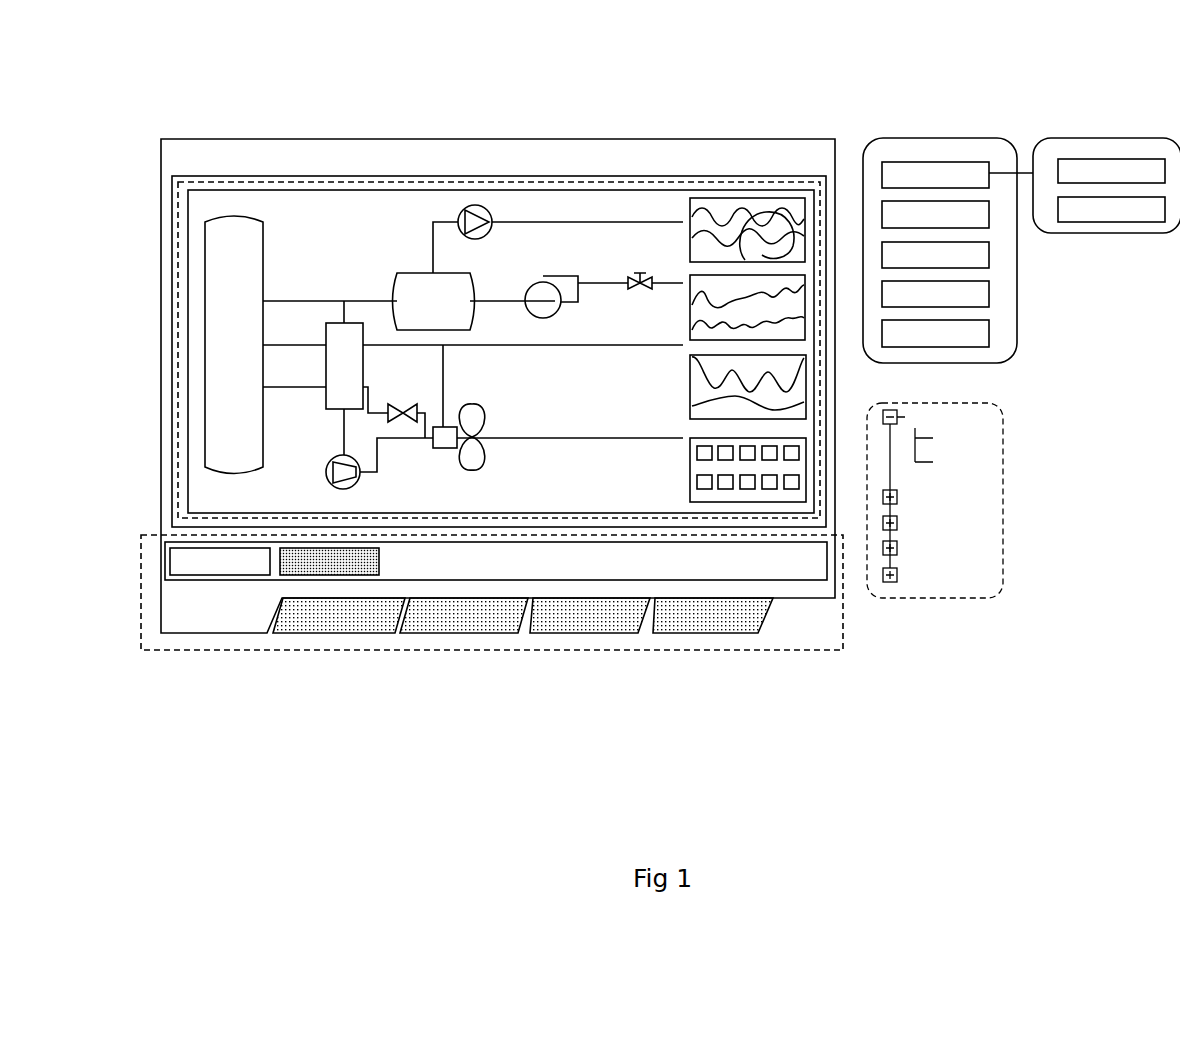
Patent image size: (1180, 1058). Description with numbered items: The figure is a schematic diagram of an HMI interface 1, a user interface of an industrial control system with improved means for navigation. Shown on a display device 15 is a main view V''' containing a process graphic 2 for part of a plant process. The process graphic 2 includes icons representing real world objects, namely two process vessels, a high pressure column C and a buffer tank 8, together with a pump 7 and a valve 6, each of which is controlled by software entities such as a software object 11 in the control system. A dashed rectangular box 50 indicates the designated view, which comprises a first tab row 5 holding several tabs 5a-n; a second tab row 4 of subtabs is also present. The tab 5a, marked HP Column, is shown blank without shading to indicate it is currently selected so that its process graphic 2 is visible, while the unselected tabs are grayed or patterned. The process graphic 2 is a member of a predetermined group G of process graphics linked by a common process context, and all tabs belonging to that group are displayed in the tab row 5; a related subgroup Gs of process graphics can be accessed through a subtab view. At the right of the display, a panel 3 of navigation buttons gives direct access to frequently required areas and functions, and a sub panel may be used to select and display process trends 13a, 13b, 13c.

The HMI interface 1 is at (499, 314).
The process graphic 2 is at (468, 367).
The panel 3 is at (762, 495).
The second tab row 4 is at (170, 555).
The first tab row 5 is at (771, 620).
The tab 5a is at (208, 630).
The tabs 5a-n is at (485, 690).
The valve 6 is at (445, 435).
The pump 7 is at (553, 285).
The buffer tank 8 is at (412, 285).
The software object 11 is at (987, 512).
The process trend 13a is at (779, 203).
The process trend 13b is at (792, 329).
The process trend 13c is at (800, 373).
The display device 15 is at (170, 158).
The rectangular box 50 is at (135, 533).
The high pressure column C is at (252, 238).
The predetermined group of process graphics G is at (941, 133).
The subgroup of process graphics Gs is at (1068, 132).
The main view V''' is at (487, 282).